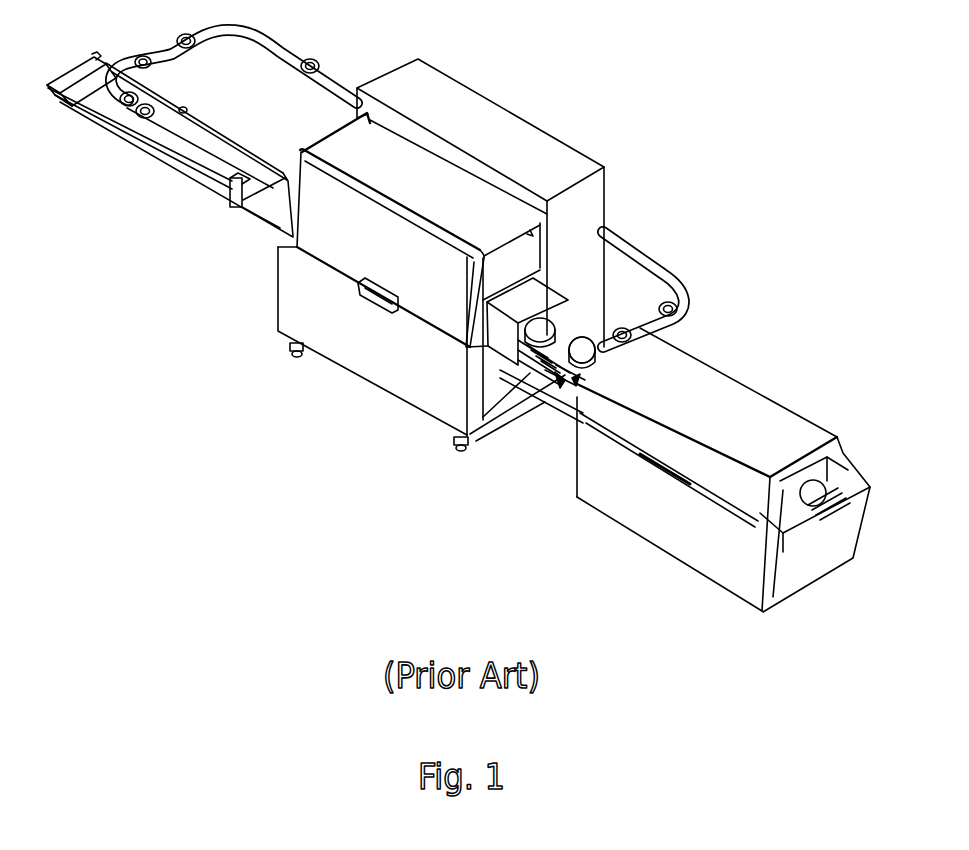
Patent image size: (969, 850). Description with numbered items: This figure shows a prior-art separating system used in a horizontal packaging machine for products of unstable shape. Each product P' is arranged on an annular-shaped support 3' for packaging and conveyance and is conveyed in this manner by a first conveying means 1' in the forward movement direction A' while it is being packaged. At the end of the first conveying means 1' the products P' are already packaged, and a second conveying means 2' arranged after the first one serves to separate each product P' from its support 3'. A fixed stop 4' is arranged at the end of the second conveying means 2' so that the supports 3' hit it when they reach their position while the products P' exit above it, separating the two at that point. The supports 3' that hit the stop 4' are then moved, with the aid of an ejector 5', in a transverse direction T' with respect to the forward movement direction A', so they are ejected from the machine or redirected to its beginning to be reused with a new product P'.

The conveying means 1' is at (170, 188).
The conveying means 2' is at (534, 311).
The annular-shaped support 3' is at (397, 188).
The stop 4' is at (704, 470).
The ejector 5' is at (534, 431).
The forward movement direction A' is at (164, 190).
The product P' is at (679, 361).
The transverse direction T' is at (707, 297).